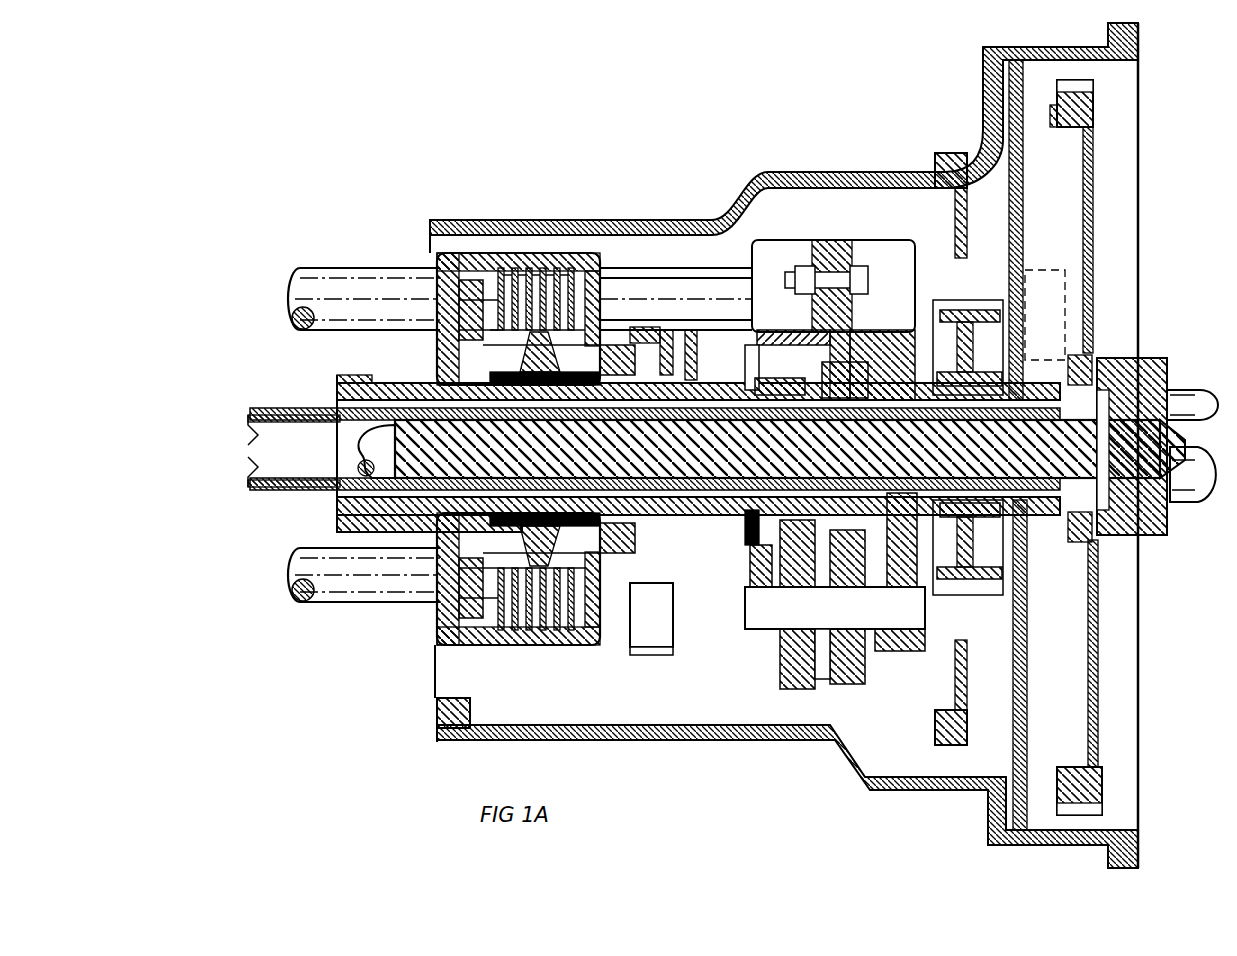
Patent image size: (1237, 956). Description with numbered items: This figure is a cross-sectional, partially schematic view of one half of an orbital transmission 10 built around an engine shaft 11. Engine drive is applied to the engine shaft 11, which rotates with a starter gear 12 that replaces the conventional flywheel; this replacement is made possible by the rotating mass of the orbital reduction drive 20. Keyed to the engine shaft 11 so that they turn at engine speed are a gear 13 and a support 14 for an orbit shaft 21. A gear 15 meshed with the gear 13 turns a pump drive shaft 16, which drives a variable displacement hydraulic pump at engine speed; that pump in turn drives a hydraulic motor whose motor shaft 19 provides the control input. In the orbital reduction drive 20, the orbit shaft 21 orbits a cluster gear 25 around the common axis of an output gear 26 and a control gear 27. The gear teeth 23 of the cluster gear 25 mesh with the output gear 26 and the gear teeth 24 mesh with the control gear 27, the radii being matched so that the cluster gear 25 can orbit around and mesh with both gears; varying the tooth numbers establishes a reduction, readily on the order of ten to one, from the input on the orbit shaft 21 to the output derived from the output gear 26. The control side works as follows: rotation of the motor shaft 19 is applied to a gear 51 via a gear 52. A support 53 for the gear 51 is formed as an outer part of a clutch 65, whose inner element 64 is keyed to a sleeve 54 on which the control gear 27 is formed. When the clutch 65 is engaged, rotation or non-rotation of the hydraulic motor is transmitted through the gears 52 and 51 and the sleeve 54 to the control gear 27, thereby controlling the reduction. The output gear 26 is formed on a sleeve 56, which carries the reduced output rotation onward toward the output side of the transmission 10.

The orbital transmission 10 is at (722, 160).
The engine shaft 11 is at (362, 432).
The starter gear 12 is at (1145, 602).
The gear 13 is at (957, 595).
The support 14 is at (912, 640).
The gear 15 is at (942, 205).
The pump drive shaft 16 is at (356, 270).
The motor shaft 19 is at (365, 600).
The orbital reduction drive 20 is at (830, 294).
The orbit shaft 21 is at (807, 622).
The gear teeth 23 is at (868, 660).
The gear teeth 24 is at (785, 660).
The cluster gear 25 is at (820, 676).
The output gear 26 is at (845, 362).
The control gear 27 is at (775, 296).
The gear 51 is at (672, 590).
The gear 52 is at (668, 650).
The support 53 is at (548, 262).
The sleeve 54 is at (752, 530).
The sleeve 56 is at (276, 415).
The inner element 64 is at (546, 640).
The clutch 65 is at (516, 640).